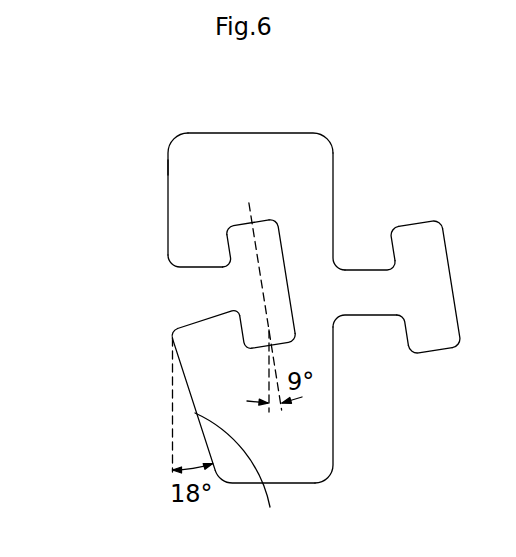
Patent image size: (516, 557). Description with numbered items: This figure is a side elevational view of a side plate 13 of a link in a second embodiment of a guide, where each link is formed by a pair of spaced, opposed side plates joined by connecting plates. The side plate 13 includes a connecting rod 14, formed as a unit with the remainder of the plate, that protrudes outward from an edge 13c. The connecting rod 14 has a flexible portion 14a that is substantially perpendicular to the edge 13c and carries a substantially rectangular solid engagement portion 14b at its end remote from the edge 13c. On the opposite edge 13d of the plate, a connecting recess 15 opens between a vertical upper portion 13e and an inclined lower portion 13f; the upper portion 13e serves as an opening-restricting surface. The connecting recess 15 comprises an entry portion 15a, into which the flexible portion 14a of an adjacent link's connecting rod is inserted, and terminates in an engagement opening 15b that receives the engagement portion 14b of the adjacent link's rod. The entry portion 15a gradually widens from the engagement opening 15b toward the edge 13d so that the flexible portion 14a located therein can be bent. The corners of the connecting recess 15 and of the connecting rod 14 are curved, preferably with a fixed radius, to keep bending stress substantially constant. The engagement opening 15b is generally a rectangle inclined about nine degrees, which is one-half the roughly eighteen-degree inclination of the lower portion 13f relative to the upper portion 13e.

The side plate 13 is at (277, 146).
The edge 13c is at (363, 178).
The opposite edge 13d is at (155, 202).
The upper portion of edge 13e is at (168, 167).
The inclined lower portion of edge 13f is at (246, 477).
The connecting rod 14 is at (411, 338).
The flexible portion 14a is at (372, 300).
The engagement portion 14b is at (440, 325).
The connecting recess 15 is at (151, 306).
The entry portion 15a is at (207, 293).
The engagement opening 15b is at (238, 238).